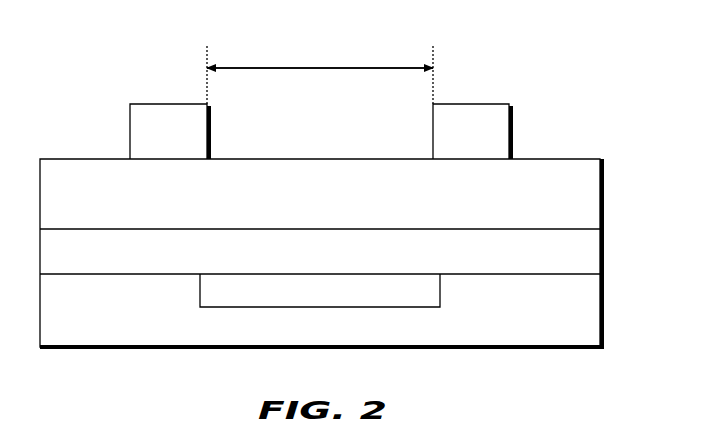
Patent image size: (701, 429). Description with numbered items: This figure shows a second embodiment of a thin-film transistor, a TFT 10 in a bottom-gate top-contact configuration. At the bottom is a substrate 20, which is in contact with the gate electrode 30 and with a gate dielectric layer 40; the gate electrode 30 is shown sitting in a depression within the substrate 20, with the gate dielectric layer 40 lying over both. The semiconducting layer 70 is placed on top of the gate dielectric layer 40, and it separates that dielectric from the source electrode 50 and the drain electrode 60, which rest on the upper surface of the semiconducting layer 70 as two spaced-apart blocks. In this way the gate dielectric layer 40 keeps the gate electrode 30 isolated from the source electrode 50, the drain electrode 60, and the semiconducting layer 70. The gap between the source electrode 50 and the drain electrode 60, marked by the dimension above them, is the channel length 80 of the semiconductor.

The TFT 10 is at (100, 93).
The substrate 20 is at (103, 318).
The gate electrode 30 is at (333, 300).
The gate dielectric layer 40 is at (333, 264).
The source electrode 50 is at (130, 130).
The drain electrode 60 is at (433, 129).
The semiconducting layer 70 is at (333, 206).
The channel length 80 is at (320, 75).